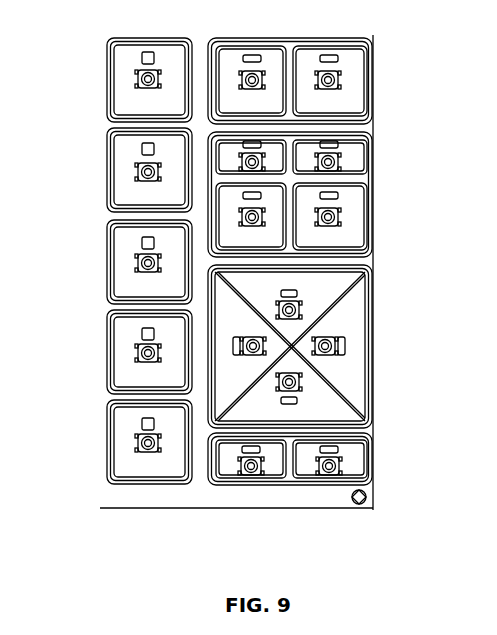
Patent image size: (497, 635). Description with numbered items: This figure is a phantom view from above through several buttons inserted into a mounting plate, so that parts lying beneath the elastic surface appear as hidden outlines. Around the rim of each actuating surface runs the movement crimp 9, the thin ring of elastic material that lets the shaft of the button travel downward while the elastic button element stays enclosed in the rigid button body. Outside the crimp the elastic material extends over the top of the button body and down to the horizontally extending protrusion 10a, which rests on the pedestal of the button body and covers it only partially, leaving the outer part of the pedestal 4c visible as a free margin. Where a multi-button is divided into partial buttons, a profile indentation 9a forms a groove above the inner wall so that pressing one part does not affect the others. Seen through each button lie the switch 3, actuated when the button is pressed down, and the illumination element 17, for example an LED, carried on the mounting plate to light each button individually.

The switch 3 is at (146, 349).
The movement crimp 9 is at (108, 261).
The profile indentation 9a is at (351, 289).
The protrusion 10a is at (377, 203).
The illumination element 17 is at (147, 150).
The outer part of the pedestal 4c is at (379, 37).